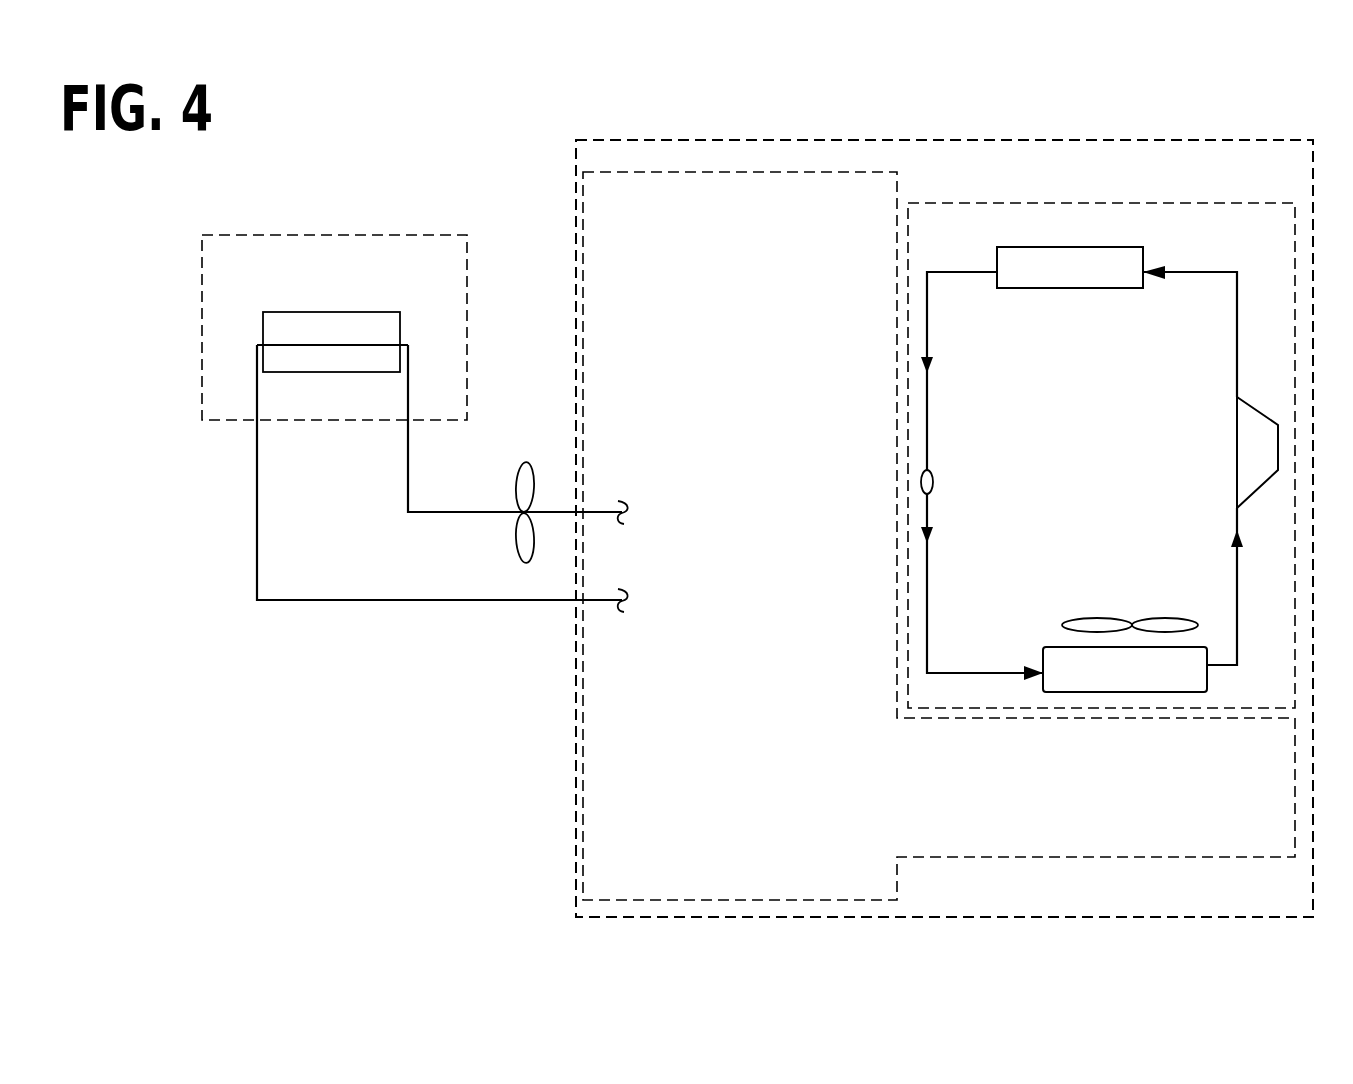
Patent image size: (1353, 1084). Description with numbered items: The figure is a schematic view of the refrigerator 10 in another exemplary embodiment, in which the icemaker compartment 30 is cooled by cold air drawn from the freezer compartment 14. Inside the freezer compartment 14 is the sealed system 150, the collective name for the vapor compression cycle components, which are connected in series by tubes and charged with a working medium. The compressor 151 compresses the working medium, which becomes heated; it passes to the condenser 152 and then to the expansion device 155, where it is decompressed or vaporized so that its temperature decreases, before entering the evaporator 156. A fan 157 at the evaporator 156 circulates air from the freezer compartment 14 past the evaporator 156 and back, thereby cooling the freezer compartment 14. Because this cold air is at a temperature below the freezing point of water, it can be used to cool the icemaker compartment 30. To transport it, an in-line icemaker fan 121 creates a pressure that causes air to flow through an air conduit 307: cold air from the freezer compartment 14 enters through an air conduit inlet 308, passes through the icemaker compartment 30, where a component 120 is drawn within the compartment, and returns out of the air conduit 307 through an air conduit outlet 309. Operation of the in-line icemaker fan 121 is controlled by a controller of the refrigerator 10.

The refrigerator 10 is at (424, 180).
The freezer compartment 14 is at (870, 213).
The icemaker compartment 30 is at (434, 275).
The heat exchanger 120 is at (323, 372).
The in-line icemaker fan 121 is at (522, 487).
The sealed system 150 is at (1281, 243).
The compressor 151 is at (1235, 477).
The condenser 152 is at (1094, 279).
The expansion device 155 is at (935, 481).
The evaporator 156 is at (1149, 683).
The fan 157 is at (1134, 620).
The air conduit 307 is at (367, 604).
The air conduit inlet 308 is at (607, 512).
The air conduit outlet 309 is at (607, 600).